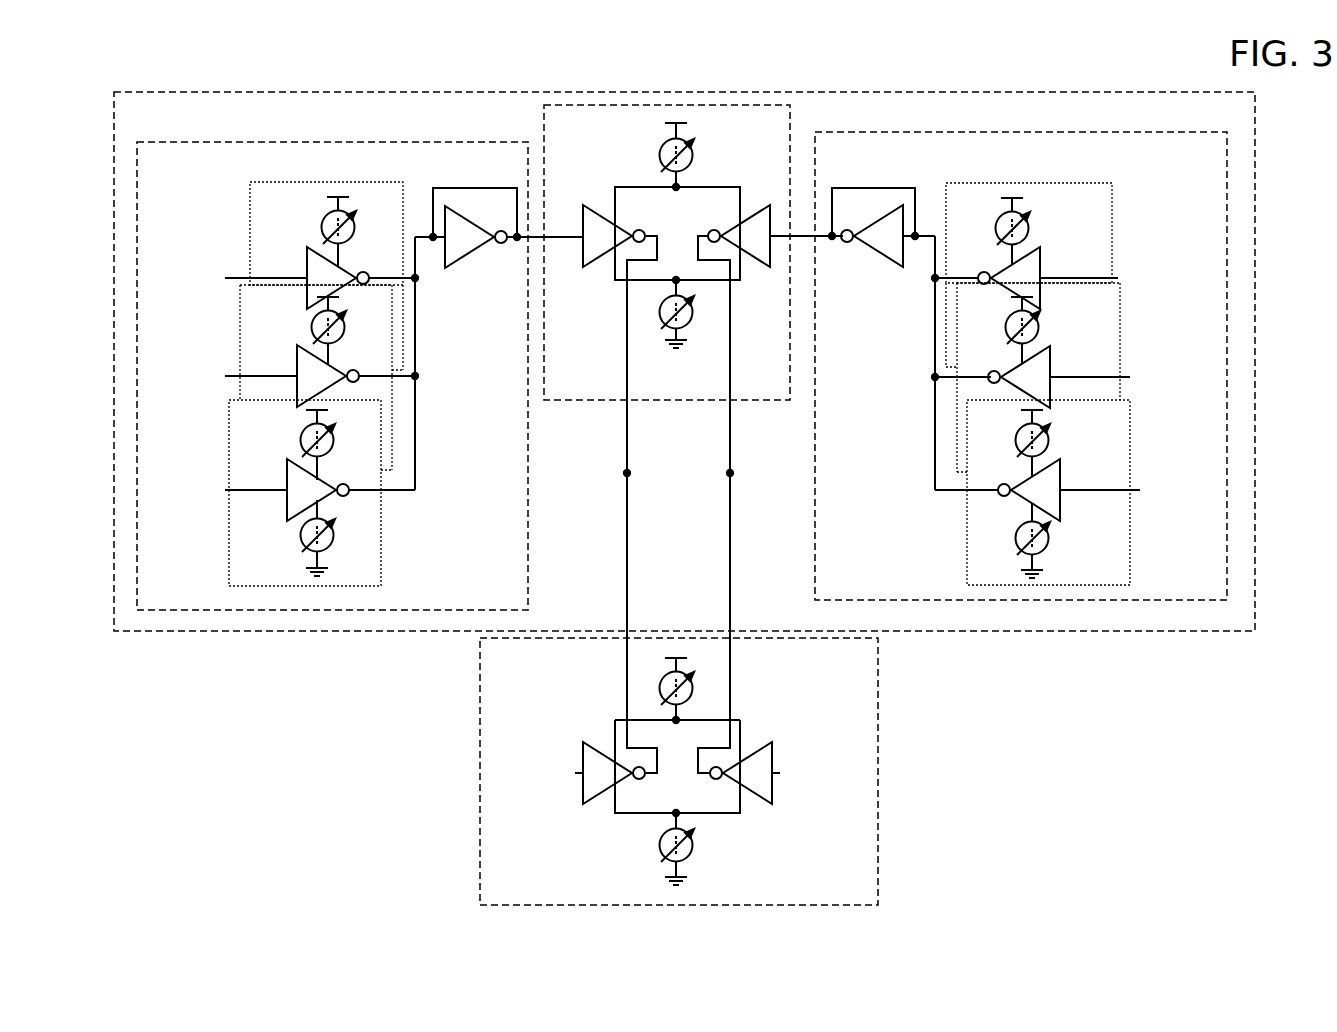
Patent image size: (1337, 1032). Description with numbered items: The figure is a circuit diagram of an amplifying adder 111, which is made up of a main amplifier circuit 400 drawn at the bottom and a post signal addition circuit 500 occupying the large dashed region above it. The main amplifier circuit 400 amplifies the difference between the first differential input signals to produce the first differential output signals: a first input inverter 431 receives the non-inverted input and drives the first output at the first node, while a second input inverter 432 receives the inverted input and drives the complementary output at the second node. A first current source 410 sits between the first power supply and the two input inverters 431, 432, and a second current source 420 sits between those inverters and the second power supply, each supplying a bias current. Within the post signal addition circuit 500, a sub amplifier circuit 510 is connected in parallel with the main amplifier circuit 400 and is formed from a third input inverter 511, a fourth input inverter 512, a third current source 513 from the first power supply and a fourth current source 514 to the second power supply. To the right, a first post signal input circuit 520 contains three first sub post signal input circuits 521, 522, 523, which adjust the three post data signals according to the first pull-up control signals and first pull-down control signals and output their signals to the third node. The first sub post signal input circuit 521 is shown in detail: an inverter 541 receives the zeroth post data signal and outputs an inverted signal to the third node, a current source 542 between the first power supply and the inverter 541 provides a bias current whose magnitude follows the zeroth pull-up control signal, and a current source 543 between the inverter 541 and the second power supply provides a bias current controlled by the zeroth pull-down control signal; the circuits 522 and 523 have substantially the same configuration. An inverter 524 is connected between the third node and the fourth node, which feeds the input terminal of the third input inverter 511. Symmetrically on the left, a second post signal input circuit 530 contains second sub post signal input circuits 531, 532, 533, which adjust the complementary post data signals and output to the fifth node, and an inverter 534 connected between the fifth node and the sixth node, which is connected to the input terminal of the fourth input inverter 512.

The amplifying adder 111 is at (262, 794).
The main amplifier circuit 400 is at (880, 800).
The first current source 410 is at (697, 684).
The second current source 420 is at (697, 850).
The first input inverter 431 is at (764, 740).
The second input inverter 432 is at (585, 740).
The post signal addition circuit 500 is at (1003, 632).
The sub amplifier circuit 510 is at (790, 113).
The third input inverter 511 is at (760, 208).
The fourth input inverter 512 is at (587, 205).
The third current source 513 is at (695, 160).
The fourth current source 514 is at (696, 330).
The first post signal input circuit 520 is at (963, 132).
The first sub post signal input circuit 521 is at (1079, 492).
The first sub post signal input circuit 522 is at (1120, 332).
The first sub post signal input circuit 523 is at (1112, 208).
The inverter 524 is at (880, 260).
The second post signal input circuit 530 is at (313, 142).
The second sub post signal input circuit 531 is at (229, 458).
The second sub post signal input circuit 532 is at (240, 345).
The second sub post signal input circuit 533 is at (250, 226).
The inverter 534 is at (466, 262).
The inverter 541 is at (1063, 482).
The current source 542 is at (1017, 434).
The current source 543 is at (1017, 531).